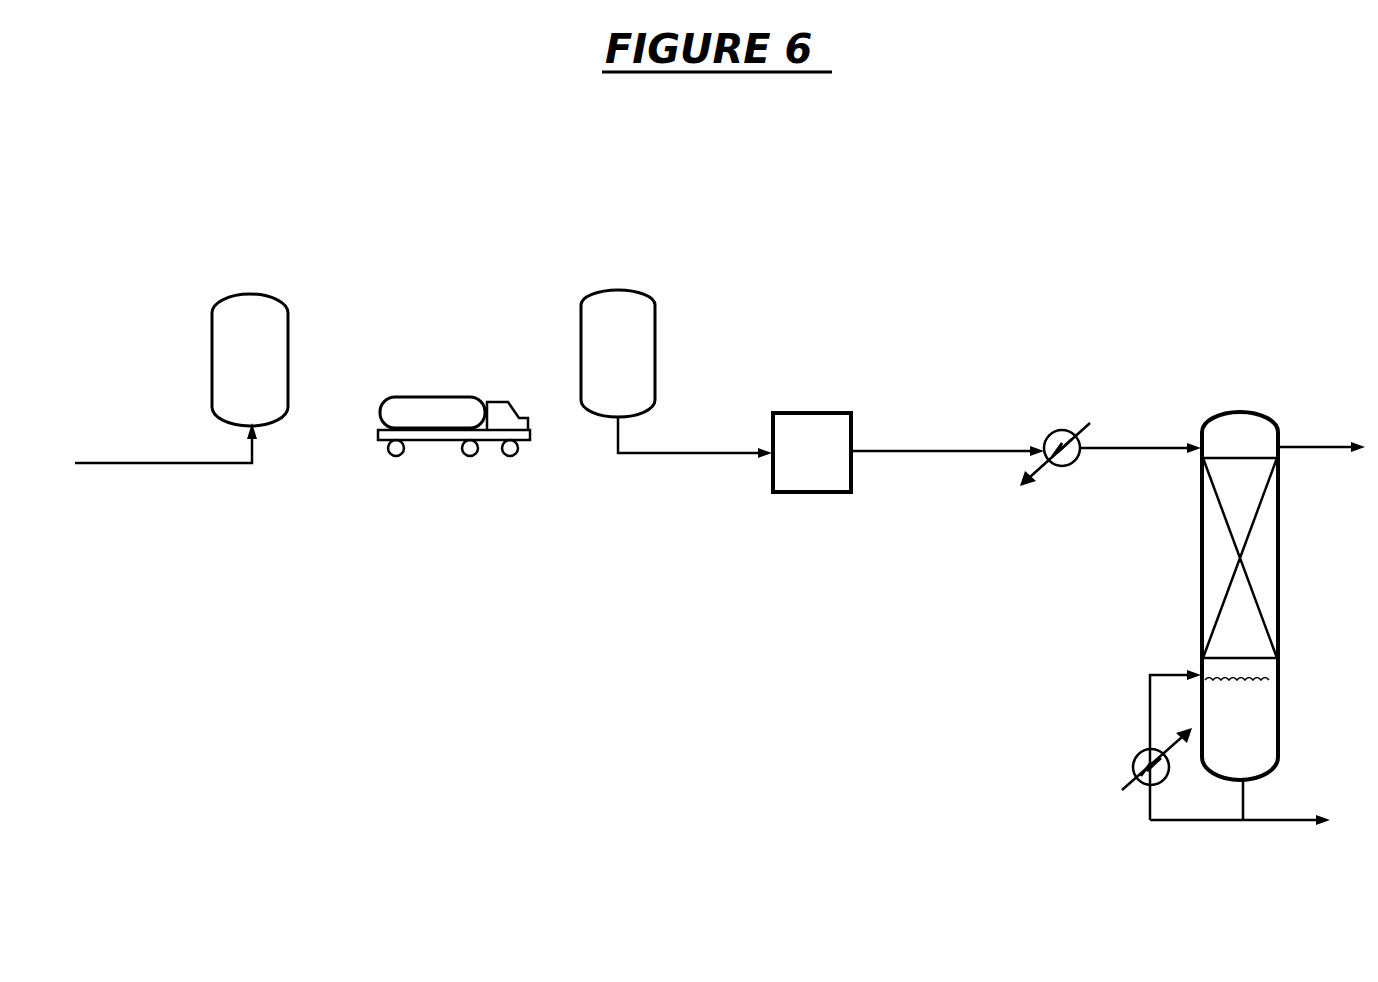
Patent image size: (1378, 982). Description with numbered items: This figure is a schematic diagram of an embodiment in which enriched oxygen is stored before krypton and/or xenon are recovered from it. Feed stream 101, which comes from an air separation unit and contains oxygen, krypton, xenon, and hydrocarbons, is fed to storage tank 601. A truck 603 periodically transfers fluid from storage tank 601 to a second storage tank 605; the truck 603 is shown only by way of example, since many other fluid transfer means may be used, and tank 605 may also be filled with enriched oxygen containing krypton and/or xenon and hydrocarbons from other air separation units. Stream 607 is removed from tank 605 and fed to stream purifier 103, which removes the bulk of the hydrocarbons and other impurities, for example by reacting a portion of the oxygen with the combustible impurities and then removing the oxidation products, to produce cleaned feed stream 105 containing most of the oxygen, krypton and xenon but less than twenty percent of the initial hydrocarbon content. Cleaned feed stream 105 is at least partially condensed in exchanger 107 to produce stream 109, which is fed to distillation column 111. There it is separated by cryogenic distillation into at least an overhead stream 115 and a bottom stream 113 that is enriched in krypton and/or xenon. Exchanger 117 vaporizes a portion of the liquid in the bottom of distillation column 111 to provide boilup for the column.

The storage tank 601 is at (211, 374).
The feed stream 101 is at (133, 464).
The truck 603 is at (415, 396).
The storage tank 605 is at (686, 333).
The stream 607 is at (663, 454).
The stream purifier 103 is at (803, 412).
The cleaned feed stream 105 is at (897, 452).
The exchanger 107 is at (1059, 431).
The stream 109 is at (1126, 449).
The distillation column 111 is at (1311, 525).
The stream 115 is at (1308, 446).
The stream 113 is at (1263, 821).
The exchanger 117 is at (1133, 768).